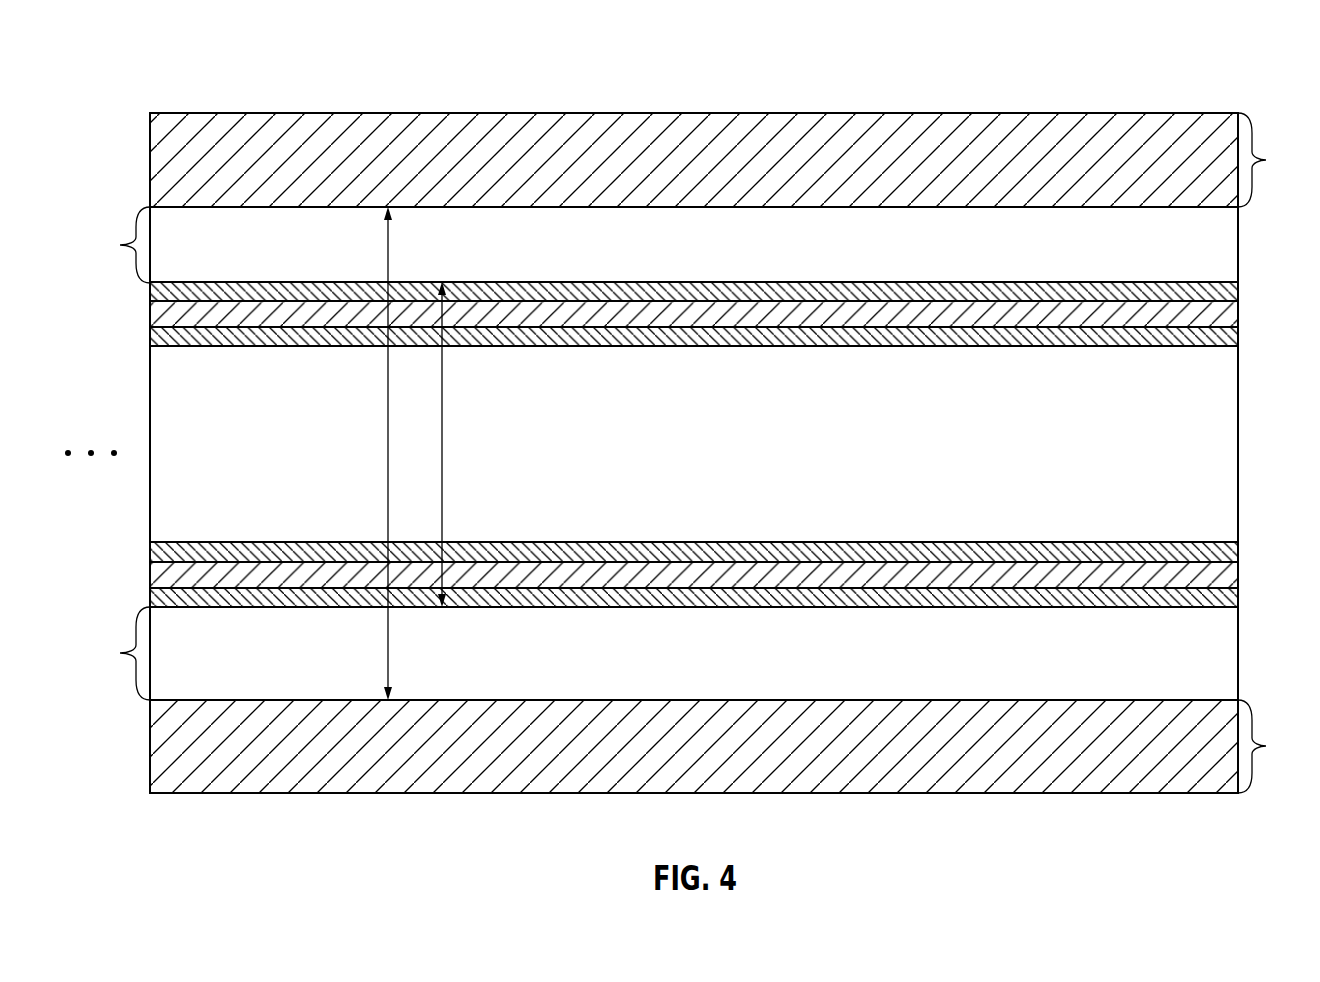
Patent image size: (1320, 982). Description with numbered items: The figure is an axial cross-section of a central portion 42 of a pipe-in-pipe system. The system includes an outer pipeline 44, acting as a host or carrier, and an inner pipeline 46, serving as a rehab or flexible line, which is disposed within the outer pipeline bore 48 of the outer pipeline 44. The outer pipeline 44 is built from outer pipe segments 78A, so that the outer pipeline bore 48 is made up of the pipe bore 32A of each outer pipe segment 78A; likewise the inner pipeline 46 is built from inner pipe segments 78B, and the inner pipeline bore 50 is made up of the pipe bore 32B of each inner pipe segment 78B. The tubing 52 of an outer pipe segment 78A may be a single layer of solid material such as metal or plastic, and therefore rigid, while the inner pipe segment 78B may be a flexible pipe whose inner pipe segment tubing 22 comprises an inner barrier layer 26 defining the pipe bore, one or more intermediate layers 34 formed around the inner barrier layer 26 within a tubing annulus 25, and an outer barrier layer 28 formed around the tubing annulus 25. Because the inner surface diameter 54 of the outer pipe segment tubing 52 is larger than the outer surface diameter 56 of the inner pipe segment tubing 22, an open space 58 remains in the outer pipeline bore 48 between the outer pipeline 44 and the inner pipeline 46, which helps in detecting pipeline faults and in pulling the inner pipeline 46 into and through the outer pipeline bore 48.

The central portion of pipe-in-pipe system 42 is at (86, 63).
The outer pipeline 44 is at (301, 100).
The inner pipeline 46 is at (301, 268).
The outer pipeline bore 48 is at (768, 256).
The pipe bore of outer pipe segment 32A is at (694, 453).
The inner pipeline bore 50 is at (768, 456).
The pipe bore of inner pipe segment 32B is at (694, 444).
The outer pipe segment tubing 52 is at (1273, 453).
The inner surface diameter 54 is at (386, 452).
The outer surface diameter 56 is at (444, 445).
The open space 58 is at (117, 453).
The outer pipe segment 78A is at (1117, 113).
The inner pipe segment 78B is at (1058, 282).
The inner pipe segment tubing 22 is at (1238, 542).
The tubing annulus 25 is at (1238, 301).
The inner barrier layer 26 is at (1243, 337).
The outer barrier layer 28 is at (1243, 290).
The intermediate layer 34 is at (150, 315).